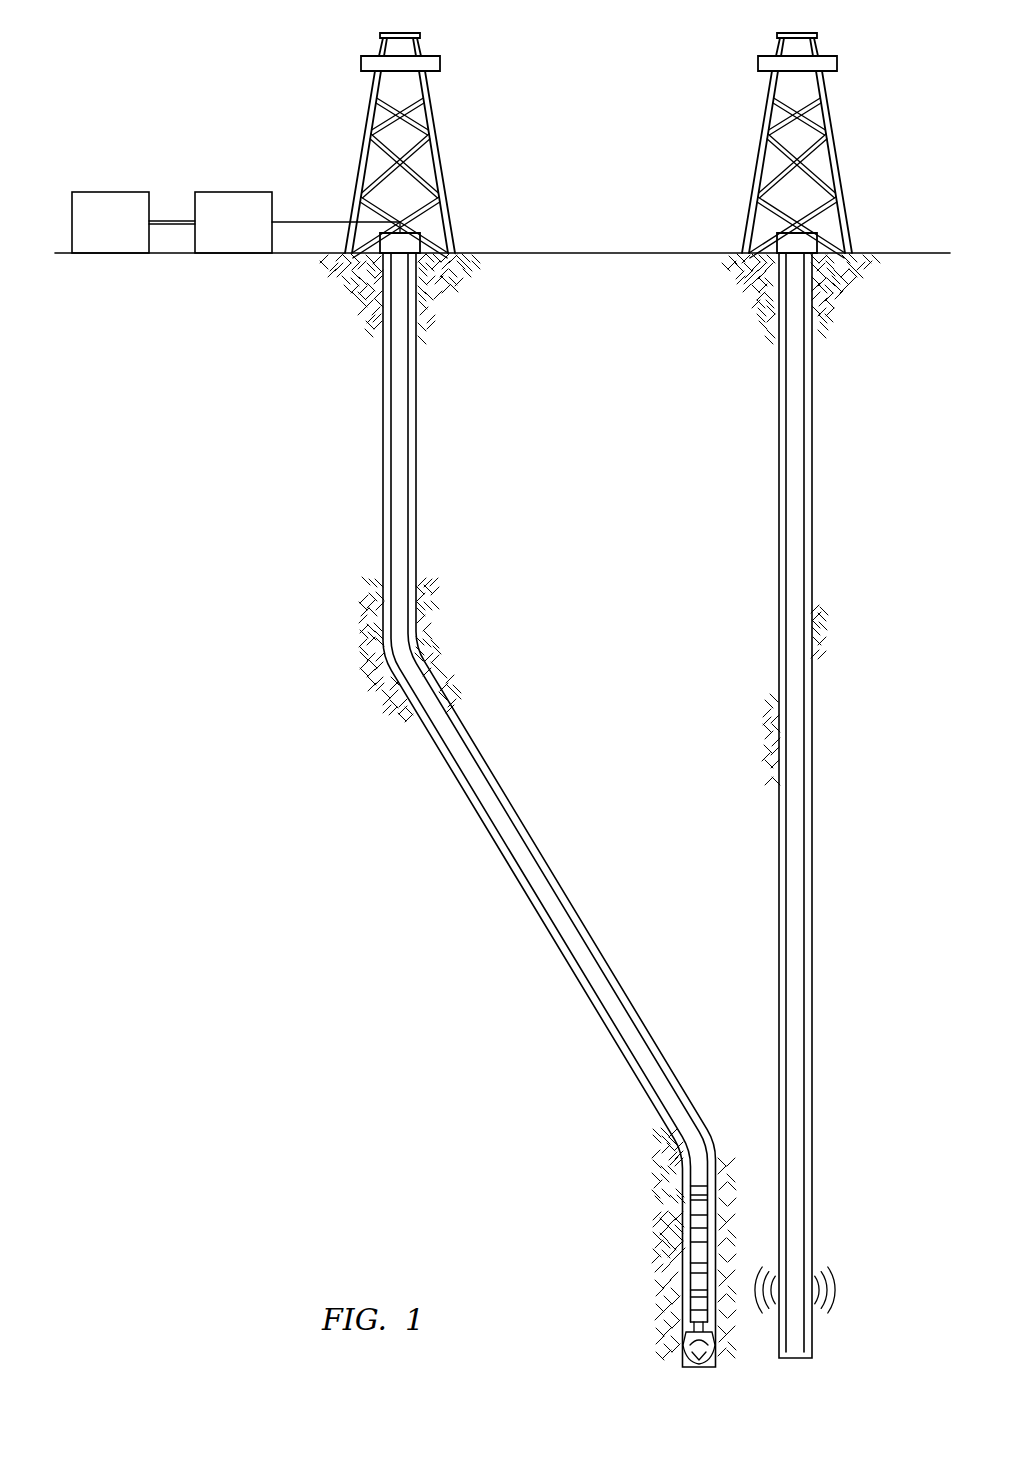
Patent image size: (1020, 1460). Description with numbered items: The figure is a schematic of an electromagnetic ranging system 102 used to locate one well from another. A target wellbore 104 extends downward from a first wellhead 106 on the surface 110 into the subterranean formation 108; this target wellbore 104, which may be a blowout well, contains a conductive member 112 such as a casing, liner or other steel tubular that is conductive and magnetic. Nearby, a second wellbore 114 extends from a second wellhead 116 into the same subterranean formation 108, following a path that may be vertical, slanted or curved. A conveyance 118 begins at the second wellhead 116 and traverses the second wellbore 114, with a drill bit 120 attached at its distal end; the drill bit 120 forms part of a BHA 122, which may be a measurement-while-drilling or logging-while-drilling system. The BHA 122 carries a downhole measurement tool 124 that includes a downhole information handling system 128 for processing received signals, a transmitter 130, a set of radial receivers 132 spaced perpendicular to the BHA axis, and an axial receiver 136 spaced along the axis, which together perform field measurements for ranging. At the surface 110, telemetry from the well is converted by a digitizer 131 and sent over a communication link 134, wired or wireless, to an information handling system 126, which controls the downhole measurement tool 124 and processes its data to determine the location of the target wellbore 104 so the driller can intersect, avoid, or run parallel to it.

The electromagnetic ranging system 102 is at (498, 702).
The target wellbore 104 is at (812, 440).
The first wellhead 106 is at (818, 240).
The subterranean formation 108 is at (751, 1095).
The surface 110 is at (622, 252).
The conductive member 112 is at (805, 843).
The second wellbore 114 is at (391, 541).
The second wellhead 116 is at (425, 240).
The conveyance 118 is at (384, 460).
The drill bit 120 is at (688, 1347).
The BHA 122 is at (688, 1275).
The downhole measurement tool 124 is at (688, 1237).
The information handling system 126 is at (127, 237).
The downhole information handling system 128 is at (688, 1197).
The transmitter 130 is at (688, 1218).
The digitizer 131 is at (250, 237).
The radial receivers 132 is at (688, 1302).
The communication link 134 is at (173, 220).
The axial receiver 136 is at (690, 1253).